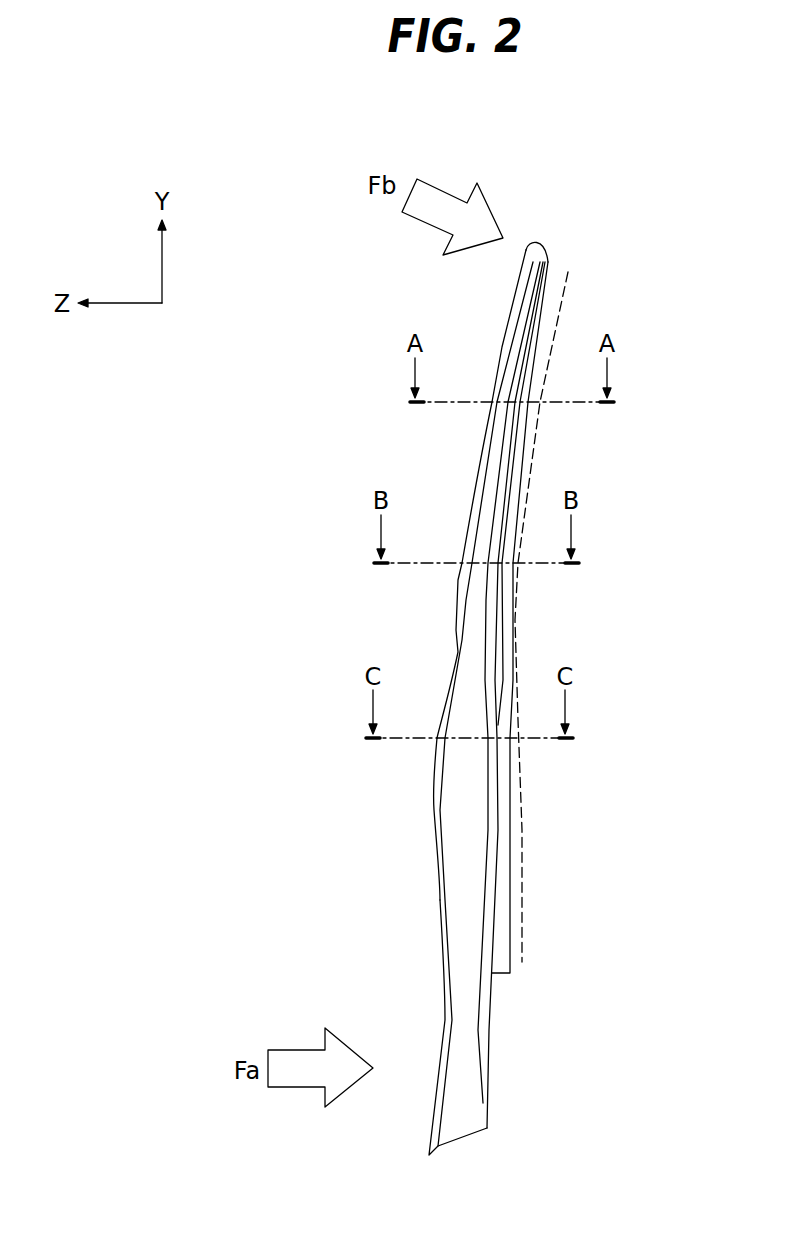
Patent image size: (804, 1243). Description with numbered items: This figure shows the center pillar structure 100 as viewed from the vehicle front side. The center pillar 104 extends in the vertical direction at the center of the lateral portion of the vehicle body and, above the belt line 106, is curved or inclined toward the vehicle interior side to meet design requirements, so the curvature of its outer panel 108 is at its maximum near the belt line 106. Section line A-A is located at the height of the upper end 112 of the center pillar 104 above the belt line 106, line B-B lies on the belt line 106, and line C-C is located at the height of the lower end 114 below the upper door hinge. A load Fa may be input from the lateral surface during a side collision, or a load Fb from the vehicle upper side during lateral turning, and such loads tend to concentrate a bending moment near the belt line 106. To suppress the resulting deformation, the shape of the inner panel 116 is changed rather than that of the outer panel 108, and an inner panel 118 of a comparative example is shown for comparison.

The center pillar structure 100 is at (575, 200).
The center pillar 104 is at (422, 818).
The belt line 106 is at (443, 564).
The outer panel 108 is at (477, 458).
The upper end 112 is at (503, 396).
The lower end 114 is at (428, 740).
The inner panel 116 is at (528, 430).
The inner panel (comparative example) 118 is at (568, 278).